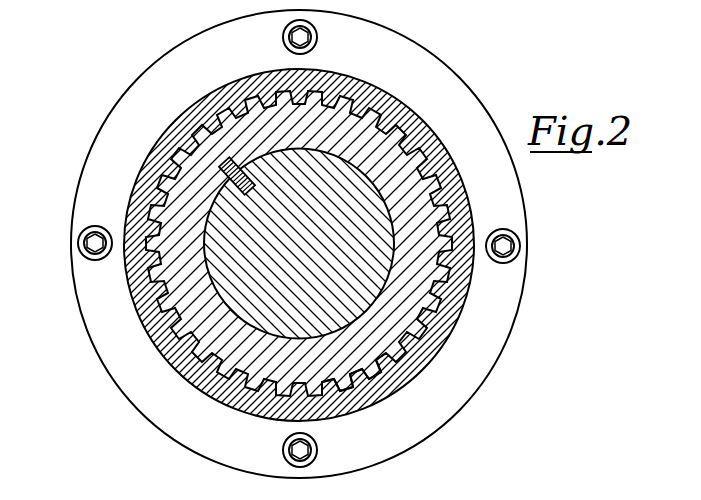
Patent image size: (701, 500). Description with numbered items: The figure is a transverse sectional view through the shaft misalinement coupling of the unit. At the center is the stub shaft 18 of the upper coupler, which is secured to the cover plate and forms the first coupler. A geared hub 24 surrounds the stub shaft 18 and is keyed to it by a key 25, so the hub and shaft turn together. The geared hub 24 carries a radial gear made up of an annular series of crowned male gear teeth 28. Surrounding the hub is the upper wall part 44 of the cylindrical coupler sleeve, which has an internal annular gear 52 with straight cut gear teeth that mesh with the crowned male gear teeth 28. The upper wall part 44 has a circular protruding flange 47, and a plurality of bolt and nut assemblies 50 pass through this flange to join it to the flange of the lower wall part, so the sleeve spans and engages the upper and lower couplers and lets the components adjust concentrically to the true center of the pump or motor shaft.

The stub shaft 18 is at (322, 180).
The geared hub 24 is at (190, 313).
The key 25 is at (250, 190).
The crowned male gear teeth 28 is at (232, 380).
The upper wall part 44 is at (385, 384).
The circular protruding flange 47 is at (487, 349).
The bolt and nut assemblies 50 is at (516, 246).
The internal annular gear 52 is at (368, 372).